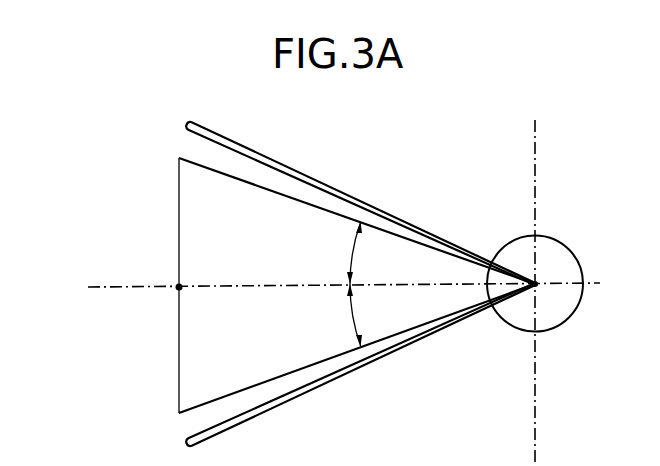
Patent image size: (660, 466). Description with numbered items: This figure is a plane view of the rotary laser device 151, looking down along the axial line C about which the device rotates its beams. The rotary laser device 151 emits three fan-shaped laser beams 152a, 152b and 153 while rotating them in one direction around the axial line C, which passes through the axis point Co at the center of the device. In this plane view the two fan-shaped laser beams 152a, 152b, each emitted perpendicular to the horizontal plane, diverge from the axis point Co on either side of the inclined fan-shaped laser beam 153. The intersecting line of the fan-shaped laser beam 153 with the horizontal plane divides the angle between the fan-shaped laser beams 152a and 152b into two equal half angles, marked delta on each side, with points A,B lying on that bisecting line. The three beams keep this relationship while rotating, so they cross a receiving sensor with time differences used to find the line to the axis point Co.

The rotary laser device 151 is at (578, 260).
The fan-shaped laser beam 152a is at (316, 388).
The fan-shaped laser beam 152b is at (287, 165).
The fan-shaped laser beam 153 is at (185, 342).
The points A and B A,B is at (179, 287).
The axial line C is at (537, 143).
The axis point Co is at (537, 287).